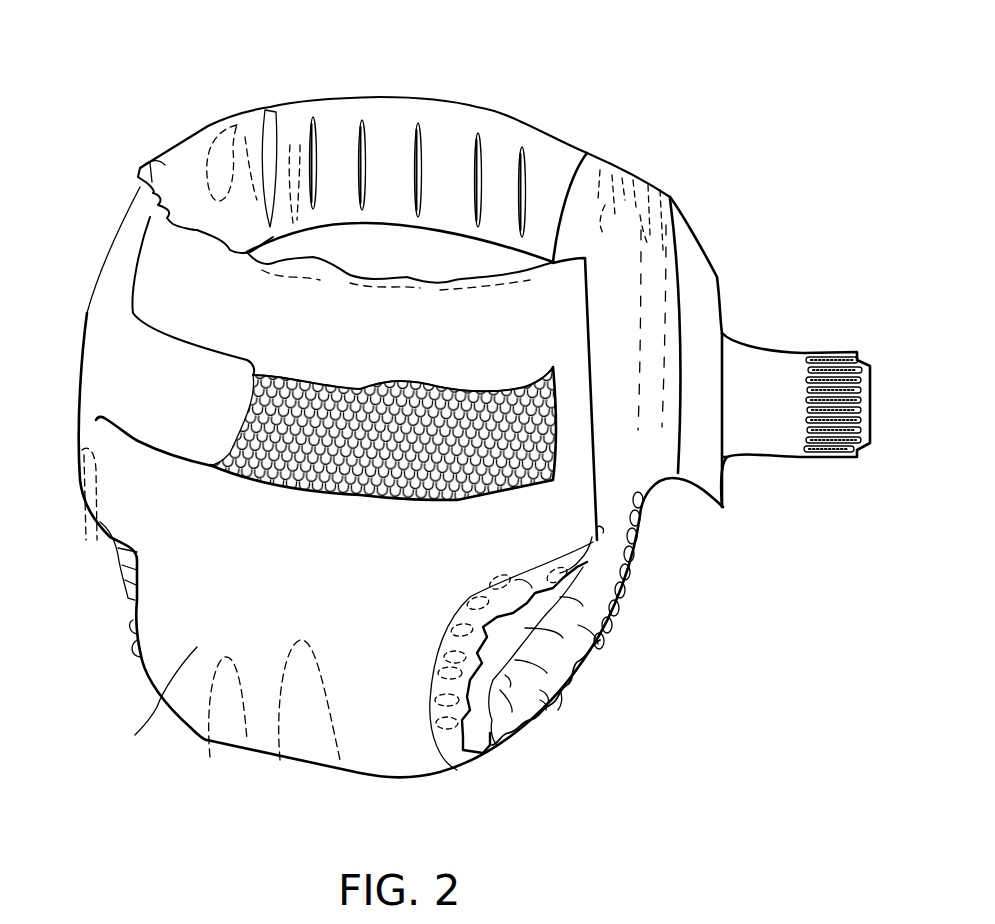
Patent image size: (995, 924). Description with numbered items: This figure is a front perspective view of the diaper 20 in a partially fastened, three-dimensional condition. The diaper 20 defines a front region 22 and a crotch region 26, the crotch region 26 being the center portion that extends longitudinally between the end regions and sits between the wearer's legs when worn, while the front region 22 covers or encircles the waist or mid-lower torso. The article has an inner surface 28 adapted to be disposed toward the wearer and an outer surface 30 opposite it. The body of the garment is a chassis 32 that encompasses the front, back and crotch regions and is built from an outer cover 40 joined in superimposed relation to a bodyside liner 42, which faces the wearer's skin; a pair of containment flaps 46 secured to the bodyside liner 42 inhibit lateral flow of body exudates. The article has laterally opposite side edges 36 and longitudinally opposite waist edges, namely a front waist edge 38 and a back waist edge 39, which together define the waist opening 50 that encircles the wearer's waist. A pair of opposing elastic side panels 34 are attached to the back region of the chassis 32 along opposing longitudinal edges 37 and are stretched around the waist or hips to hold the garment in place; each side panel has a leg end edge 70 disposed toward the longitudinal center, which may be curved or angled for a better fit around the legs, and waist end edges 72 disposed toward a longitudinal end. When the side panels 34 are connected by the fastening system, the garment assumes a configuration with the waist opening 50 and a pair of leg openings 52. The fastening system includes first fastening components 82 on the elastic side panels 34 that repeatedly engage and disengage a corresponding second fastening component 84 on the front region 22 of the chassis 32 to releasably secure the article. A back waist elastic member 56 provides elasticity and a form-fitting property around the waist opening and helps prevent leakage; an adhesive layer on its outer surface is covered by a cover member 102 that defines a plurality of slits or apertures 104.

The diaper 20 is at (141, 118).
The front region 22 is at (238, 618).
The crotch region 26 is at (413, 768).
The inner surface 28 is at (437, 263).
The outer surface 30 is at (220, 518).
The chassis 32 is at (193, 585).
The elastic side panels 34 is at (140, 172).
The side edges 36 is at (130, 627).
The longitudinal edges 37 is at (110, 307).
The front waist edge 38 is at (280, 263).
The back waist edge 39 is at (479, 107).
The outer cover 40 is at (160, 700).
The bodyside liner 42 is at (586, 199).
The containment flaps 46 is at (593, 597).
The waist opening 50 is at (331, 75).
The leg openings 52 is at (526, 688).
The back waist elastic member 56 is at (363, 100).
The leg end edge 70 is at (493, 580).
The waist end edges 72 is at (570, 262).
The first fastening components 82 is at (830, 448).
The second fastening component 84 is at (337, 493).
The cover member 102 is at (287, 142).
The slits or apertures 104 is at (312, 118).